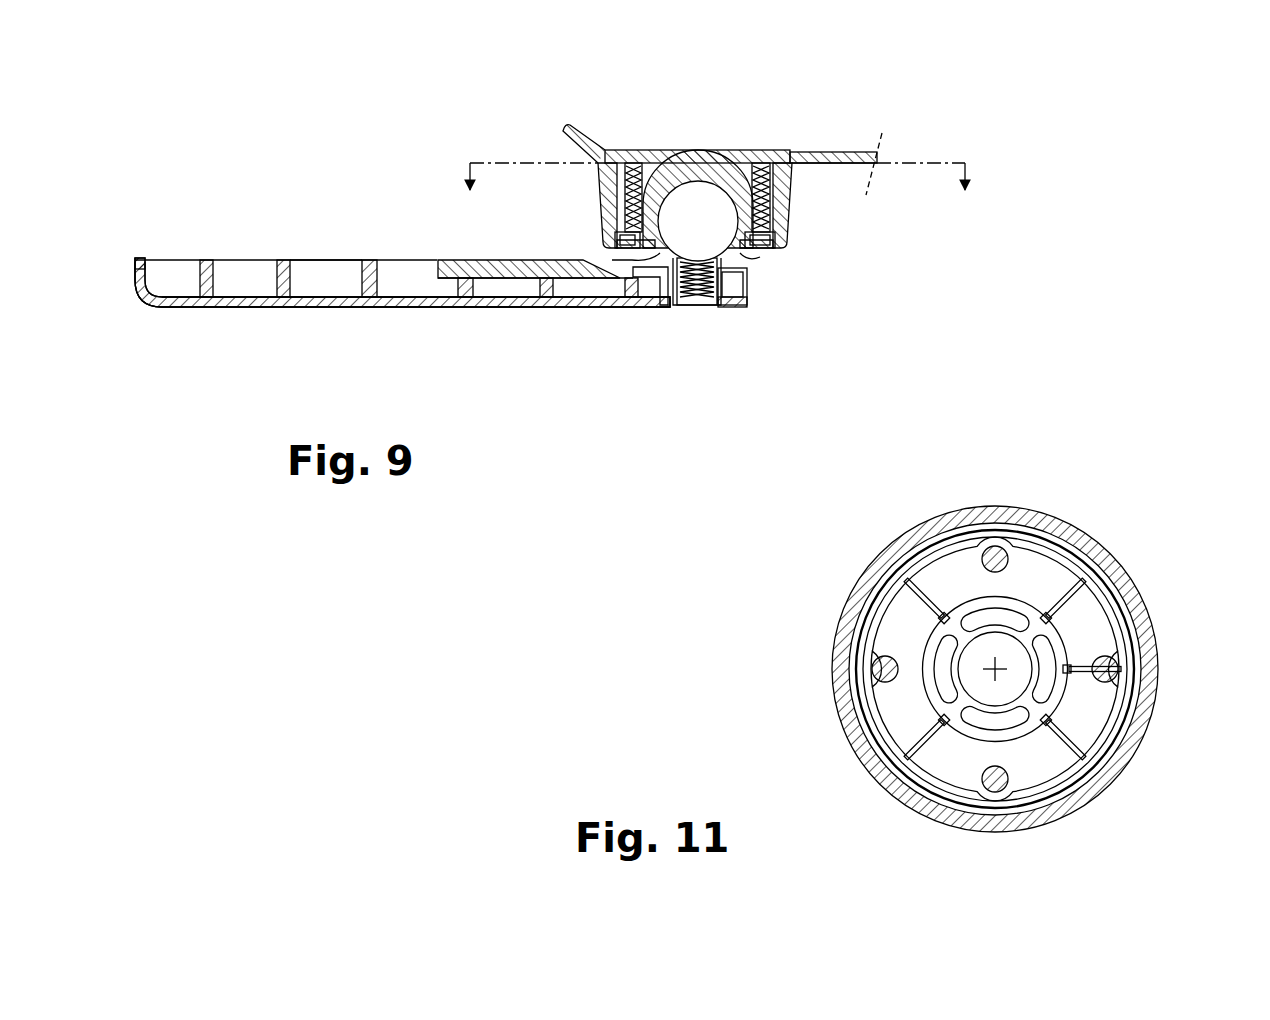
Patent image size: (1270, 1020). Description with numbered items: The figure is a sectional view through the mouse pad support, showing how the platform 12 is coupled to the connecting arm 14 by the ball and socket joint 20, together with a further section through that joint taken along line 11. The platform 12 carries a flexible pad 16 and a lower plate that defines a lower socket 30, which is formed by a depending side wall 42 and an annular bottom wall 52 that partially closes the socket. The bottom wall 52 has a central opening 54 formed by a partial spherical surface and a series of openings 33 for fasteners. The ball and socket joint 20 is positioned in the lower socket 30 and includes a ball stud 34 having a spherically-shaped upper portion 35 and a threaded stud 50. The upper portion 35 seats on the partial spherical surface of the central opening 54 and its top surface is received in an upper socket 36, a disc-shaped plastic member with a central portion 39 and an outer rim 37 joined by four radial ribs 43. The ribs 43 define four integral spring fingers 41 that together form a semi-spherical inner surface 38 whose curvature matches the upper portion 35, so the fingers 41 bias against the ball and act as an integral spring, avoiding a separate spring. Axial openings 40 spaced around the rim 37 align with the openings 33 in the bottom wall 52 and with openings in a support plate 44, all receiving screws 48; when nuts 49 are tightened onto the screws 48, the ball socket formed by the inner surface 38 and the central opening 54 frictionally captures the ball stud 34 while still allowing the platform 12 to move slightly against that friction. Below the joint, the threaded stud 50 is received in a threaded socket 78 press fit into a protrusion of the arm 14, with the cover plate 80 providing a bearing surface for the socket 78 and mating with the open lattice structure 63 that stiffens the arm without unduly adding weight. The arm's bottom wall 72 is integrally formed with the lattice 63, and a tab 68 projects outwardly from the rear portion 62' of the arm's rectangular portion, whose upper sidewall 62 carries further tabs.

In FIG. 9, the section line 11 is at (719, 176).
In FIG. 9, the platform 12 is at (812, 229).
In FIG. 9, the connecting arm 14 is at (403, 309).
In FIG. 9, the flexible pad 16 is at (880, 134).
In FIG. 9, the ball and socket joint 20 is at (689, 52).
In FIG. 9, the lower socket 30 is at (614, 208).
In FIG. 9, the openings 33 is at (612, 258).
In FIG. 9, the ball stud 34 is at (708, 237).
In FIG. 9, the spherically-shaped upper portion 35 is at (737, 152).
In FIG. 9, the upper socket 36 is at (709, 192).
In FIG. 11, the upper socket 36 is at (1003, 530).
In FIG. 9, the outer rim 37 is at (604, 162).
In FIG. 11, the outer rim 37 is at (1100, 594).
In FIG. 9, the semi-spherical inner surface 38 is at (660, 170).
In FIG. 9, the central portion 39 is at (699, 174).
In FIG. 11, the central portion 39 is at (918, 634).
In FIG. 9, the axial openings 40 is at (800, 159).
In FIG. 9, the spring fingers 41 is at (754, 162).
In FIG. 11, the spring fingers 41 is at (950, 585).
In FIG. 9, the depending side wall 42 is at (800, 190).
In FIG. 11, the depending side wall 42 is at (1160, 681).
In FIG. 11, the radial ribs 43 is at (1052, 612).
In FIG. 9, the support plate 44 is at (670, 163).
In FIG. 9, the screws 48 is at (630, 203).
In FIG. 11, the screws 48 is at (1112, 684).
In FIG. 9, the nuts 49 is at (620, 237).
In FIG. 9, the threaded stud 50 is at (724, 301).
In FIG. 9, the bottom wall 52 is at (744, 252).
In FIG. 9, the central opening 54 is at (679, 257).
In FIG. 9, the upper sidewall 62 is at (326, 220).
In FIG. 9, the rear portion 62' is at (116, 293).
In FIG. 9, the open lattice structure 63 is at (270, 259).
In FIG. 9, the tab 68 is at (139, 258).
In FIG. 9, the bottom wall 72 is at (241, 308).
In FIG. 9, the socket 78 is at (669, 300).
In FIG. 9, the cover plate 80 is at (490, 271).